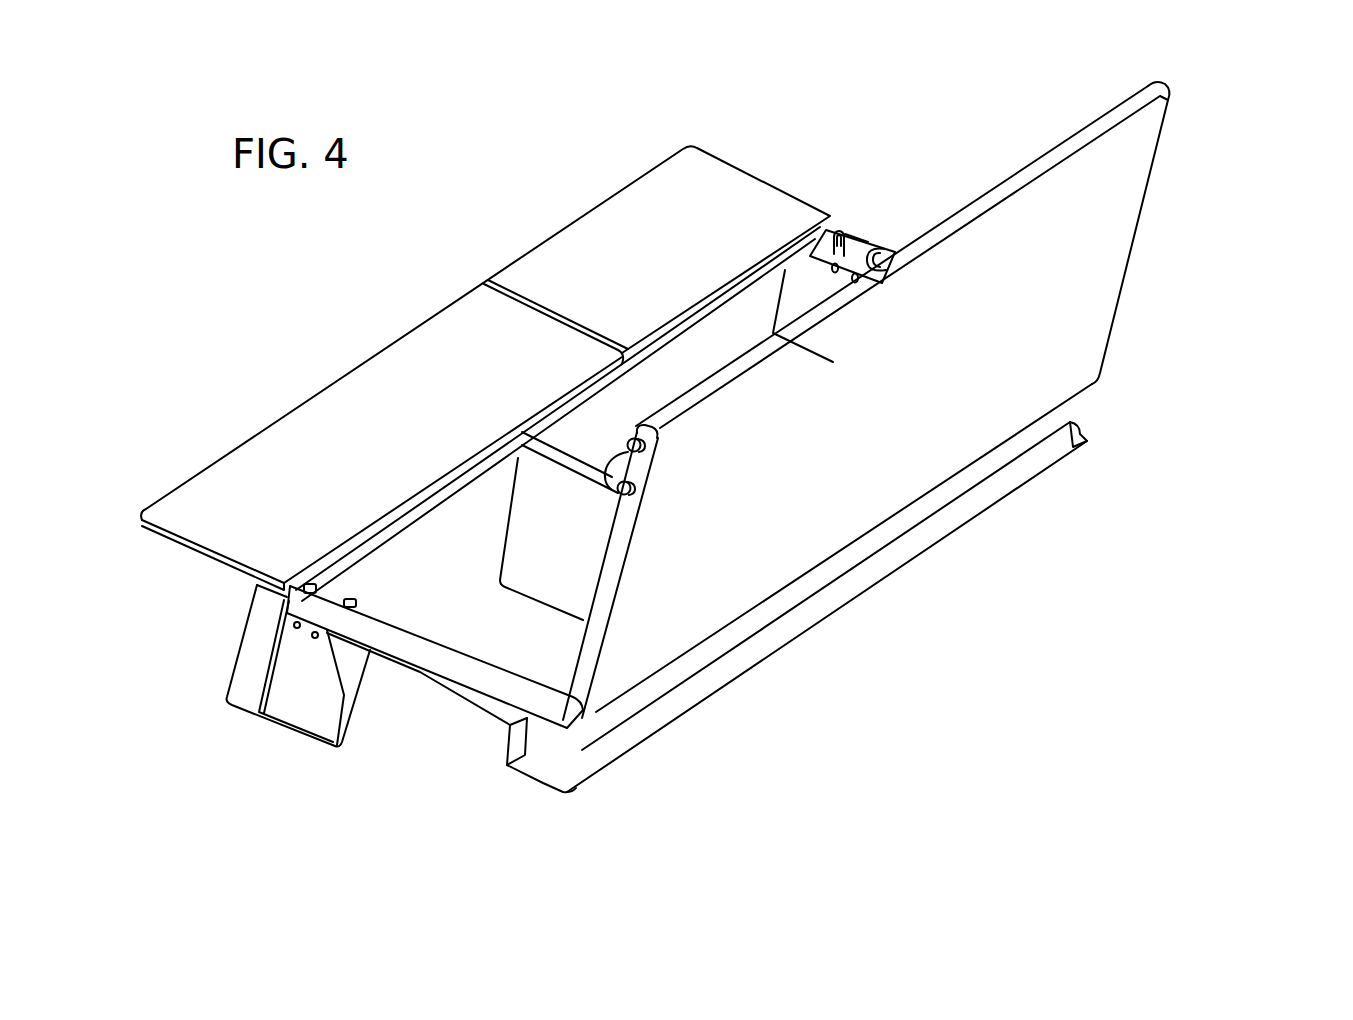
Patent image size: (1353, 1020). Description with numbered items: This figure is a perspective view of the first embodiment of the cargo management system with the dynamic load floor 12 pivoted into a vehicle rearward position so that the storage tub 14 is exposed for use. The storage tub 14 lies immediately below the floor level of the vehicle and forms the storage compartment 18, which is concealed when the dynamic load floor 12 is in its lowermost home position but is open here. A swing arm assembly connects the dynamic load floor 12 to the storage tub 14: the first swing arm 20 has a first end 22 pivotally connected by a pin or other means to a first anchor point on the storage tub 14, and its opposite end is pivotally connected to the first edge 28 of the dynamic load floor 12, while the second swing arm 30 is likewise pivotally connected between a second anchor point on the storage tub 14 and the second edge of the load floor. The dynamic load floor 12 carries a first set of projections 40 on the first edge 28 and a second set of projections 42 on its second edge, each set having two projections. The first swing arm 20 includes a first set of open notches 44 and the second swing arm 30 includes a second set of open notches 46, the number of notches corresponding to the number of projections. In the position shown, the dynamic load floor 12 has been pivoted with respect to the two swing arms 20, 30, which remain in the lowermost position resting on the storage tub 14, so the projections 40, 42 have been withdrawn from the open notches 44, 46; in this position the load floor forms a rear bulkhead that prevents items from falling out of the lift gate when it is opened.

The dynamic load floor 12 is at (932, 398).
The storage tub 14 is at (373, 735).
The storage compartment 18 is at (470, 555).
The first swing arm 20 is at (462, 677).
The first end 22 is at (562, 718).
The first edge 28 is at (598, 618).
The second swing arm 30 is at (867, 243).
The first set of projections 40 is at (642, 445).
The second set of projections 42 is at (1170, 88).
The first set of open notches 44 is at (350, 600).
The second set of open notches 46 is at (838, 232).